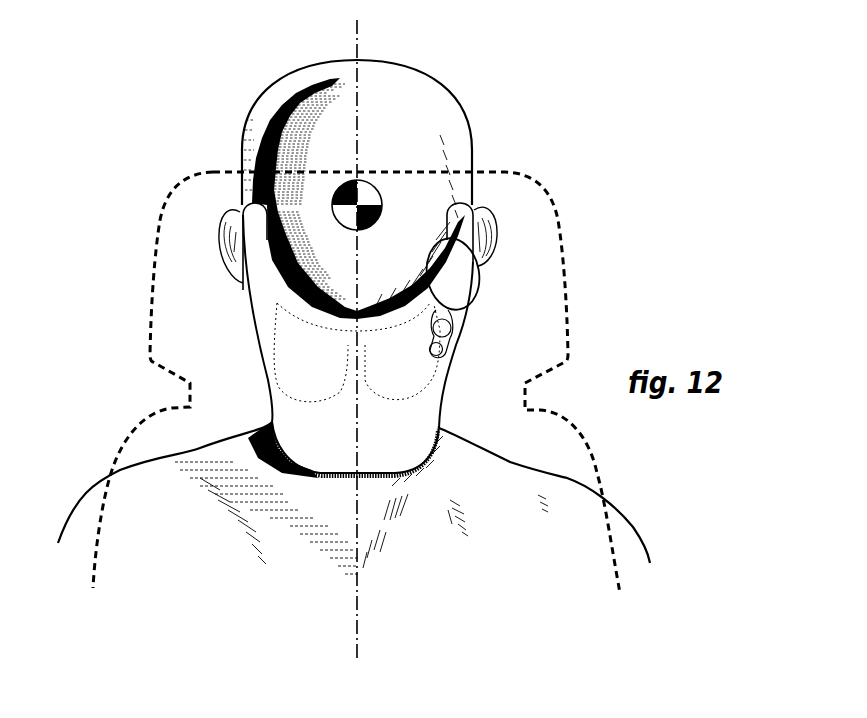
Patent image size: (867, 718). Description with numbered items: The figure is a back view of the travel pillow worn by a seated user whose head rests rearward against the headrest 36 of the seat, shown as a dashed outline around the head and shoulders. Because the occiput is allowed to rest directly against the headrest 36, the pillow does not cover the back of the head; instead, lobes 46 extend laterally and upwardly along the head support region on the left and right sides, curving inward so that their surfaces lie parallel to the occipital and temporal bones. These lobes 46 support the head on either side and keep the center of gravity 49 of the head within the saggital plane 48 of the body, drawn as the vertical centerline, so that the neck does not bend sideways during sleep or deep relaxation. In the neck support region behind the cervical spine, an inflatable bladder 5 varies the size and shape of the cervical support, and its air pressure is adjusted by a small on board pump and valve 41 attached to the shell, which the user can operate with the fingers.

The inflatable bladder 5 is at (357, 352).
The headrest 36 is at (153, 363).
The on board pump and valve 41 is at (453, 280).
The lobes 46 is at (263, 250).
The saggital plane 48 is at (360, 100).
The center of gravity 49 is at (380, 184).